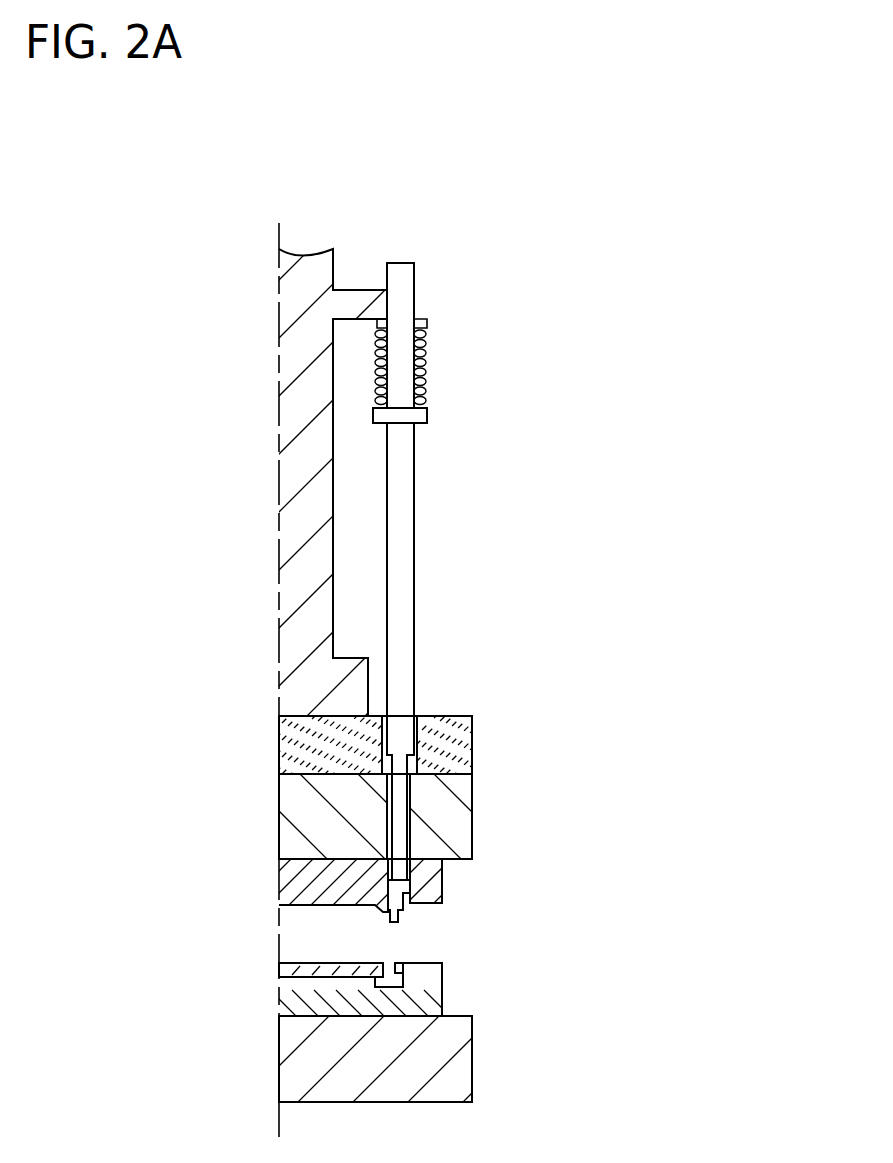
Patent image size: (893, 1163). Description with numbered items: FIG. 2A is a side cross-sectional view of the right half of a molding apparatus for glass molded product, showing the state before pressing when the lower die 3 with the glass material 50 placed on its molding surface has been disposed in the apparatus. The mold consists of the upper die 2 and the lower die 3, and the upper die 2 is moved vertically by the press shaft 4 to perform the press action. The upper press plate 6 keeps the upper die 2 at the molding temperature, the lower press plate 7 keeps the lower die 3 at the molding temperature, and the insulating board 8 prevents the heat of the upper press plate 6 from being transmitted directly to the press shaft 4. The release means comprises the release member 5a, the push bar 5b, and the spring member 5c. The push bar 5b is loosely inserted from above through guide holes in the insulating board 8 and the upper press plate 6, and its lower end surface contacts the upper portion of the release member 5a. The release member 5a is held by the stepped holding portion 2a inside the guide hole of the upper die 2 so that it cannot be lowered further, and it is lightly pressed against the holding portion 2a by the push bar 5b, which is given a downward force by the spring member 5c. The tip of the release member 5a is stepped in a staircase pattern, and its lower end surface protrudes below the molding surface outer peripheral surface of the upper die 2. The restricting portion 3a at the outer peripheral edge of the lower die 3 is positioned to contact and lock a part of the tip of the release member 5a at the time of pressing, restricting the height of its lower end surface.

The press shaft 4 is at (333, 272).
The release member 5a is at (390, 892).
The push bar 5b is at (414, 541).
The spring member 5c is at (463, 315).
The insulating board 8 is at (472, 742).
The upper press plate 6 is at (472, 812).
The upper die 2 is at (442, 881).
The holding portion 2a is at (405, 908).
The glass material 50 is at (323, 963).
The lower die 3 is at (442, 990).
The restricting portion 3a is at (400, 960).
The lower press plate 7 is at (472, 1050).